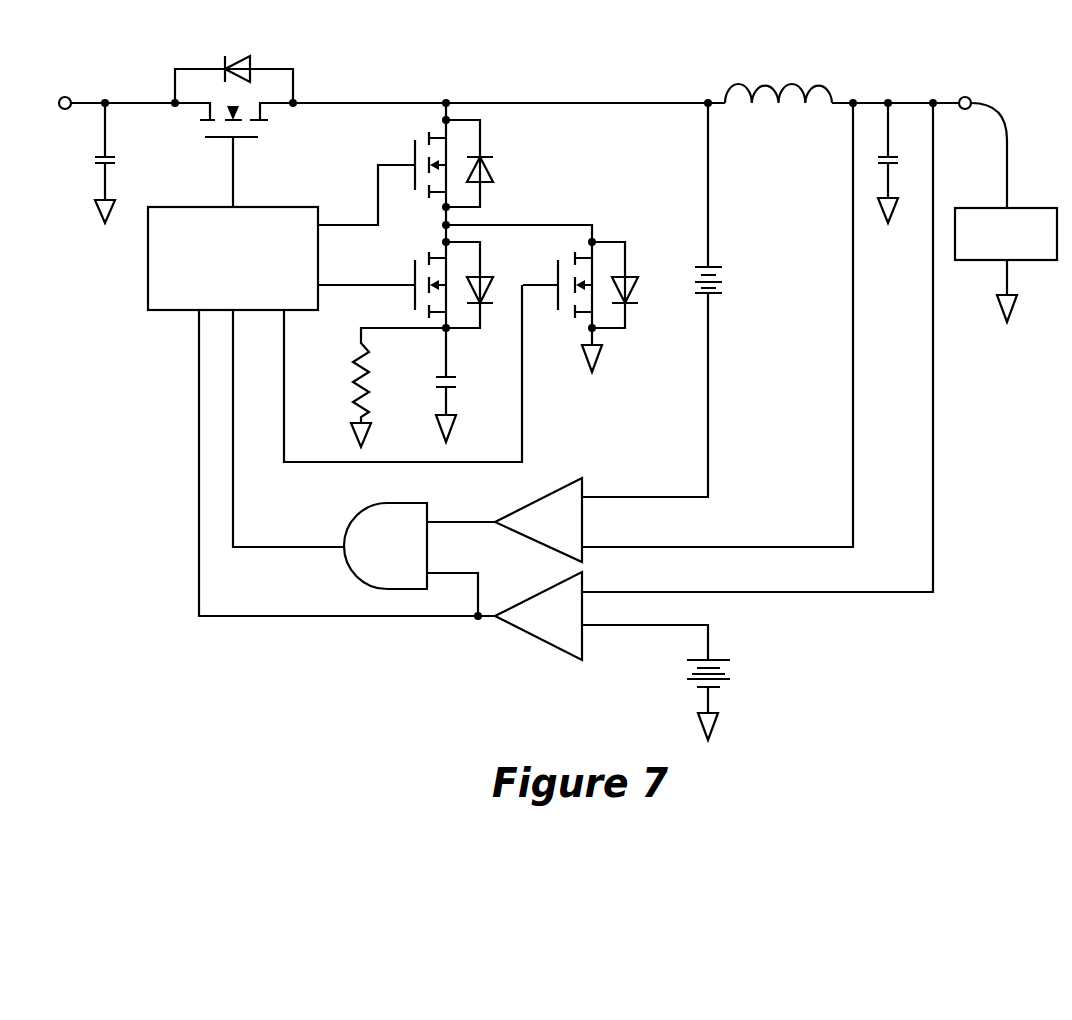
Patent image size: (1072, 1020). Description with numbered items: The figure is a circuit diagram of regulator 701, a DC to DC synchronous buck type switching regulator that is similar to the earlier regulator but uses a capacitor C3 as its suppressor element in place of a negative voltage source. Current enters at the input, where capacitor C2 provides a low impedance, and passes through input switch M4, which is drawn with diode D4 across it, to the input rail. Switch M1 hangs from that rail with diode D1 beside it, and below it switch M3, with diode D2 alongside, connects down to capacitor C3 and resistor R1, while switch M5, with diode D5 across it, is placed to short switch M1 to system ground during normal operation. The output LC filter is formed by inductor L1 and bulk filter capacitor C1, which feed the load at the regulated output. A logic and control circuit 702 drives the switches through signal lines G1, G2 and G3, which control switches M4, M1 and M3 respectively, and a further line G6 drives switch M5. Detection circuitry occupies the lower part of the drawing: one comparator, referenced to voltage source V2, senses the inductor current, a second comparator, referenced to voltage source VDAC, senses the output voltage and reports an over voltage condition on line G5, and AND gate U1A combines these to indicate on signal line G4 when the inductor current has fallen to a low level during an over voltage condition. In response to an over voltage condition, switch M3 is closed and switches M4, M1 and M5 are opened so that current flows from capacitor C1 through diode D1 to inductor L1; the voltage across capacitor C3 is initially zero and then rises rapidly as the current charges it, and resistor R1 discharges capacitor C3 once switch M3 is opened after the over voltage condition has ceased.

The regulator 701 is at (527, 86).
The control circuit 702 is at (233, 258).
The capacitor C2 is at (120, 172).
The diode D4 is at (234, 67).
The switch M4 is at (217, 126).
The line G1 is at (248, 172).
The line G2 is at (366, 195).
The line G3 is at (366, 272).
The signal line G4 is at (288, 428).
The line G5 is at (320, 463).
The gate signal G6 is at (403, 373).
The switch M1 is at (419, 158).
The diode D1 is at (486, 163).
The switch M3 is at (417, 276).
The diode D2 is at (481, 285).
The switch M5 is at (569, 321).
The diode D5 is at (626, 285).
The capacitor C3 is at (460, 392).
The resistor R1 is at (383, 387).
The AND gate U1A is at (406, 553).
The voltage source V2 is at (671, 300).
The inductor L1 is at (778, 80).
The bulk filter capacitor C1 is at (899, 172).
The voltage source VDAC is at (681, 688).